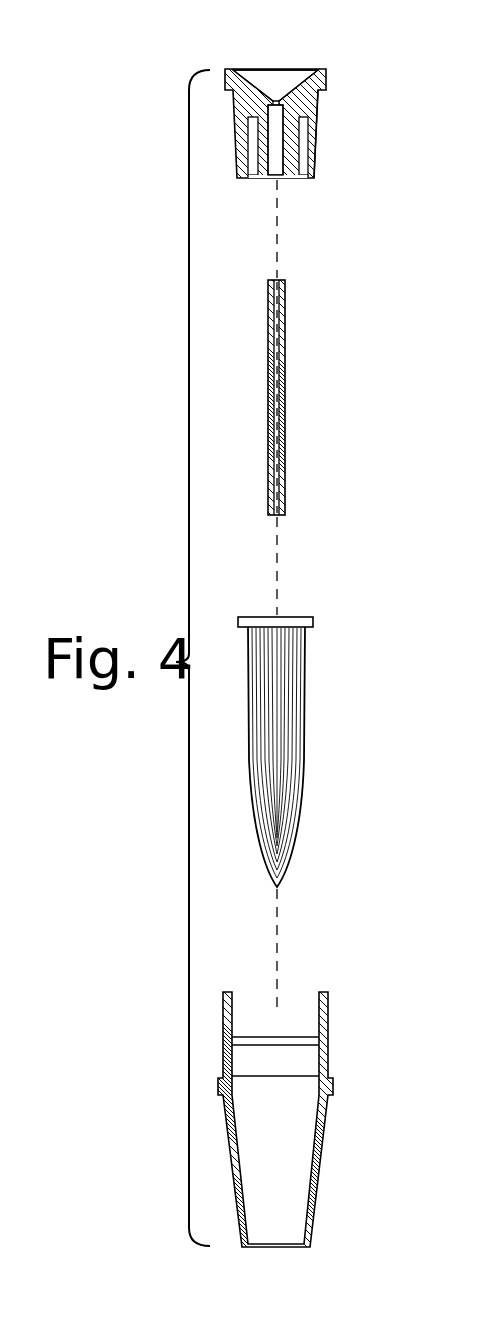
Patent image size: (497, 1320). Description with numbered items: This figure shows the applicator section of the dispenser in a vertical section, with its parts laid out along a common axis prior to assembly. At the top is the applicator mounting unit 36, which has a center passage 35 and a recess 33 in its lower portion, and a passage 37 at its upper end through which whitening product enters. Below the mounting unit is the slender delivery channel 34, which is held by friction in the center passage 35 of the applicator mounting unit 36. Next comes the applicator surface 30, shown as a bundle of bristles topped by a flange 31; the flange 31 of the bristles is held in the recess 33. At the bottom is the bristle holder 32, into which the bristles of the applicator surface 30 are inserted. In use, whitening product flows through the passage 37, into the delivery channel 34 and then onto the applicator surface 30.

The applicator surface 30 is at (305, 703).
The flange 31 is at (313, 622).
The bristle holder 32 is at (320, 1137).
The recess 33 is at (300, 180).
The delivery channel 34 is at (285, 393).
The center passage 35 is at (277, 143).
The applicator mounting unit 36 is at (317, 117).
The passage 37 is at (280, 78).